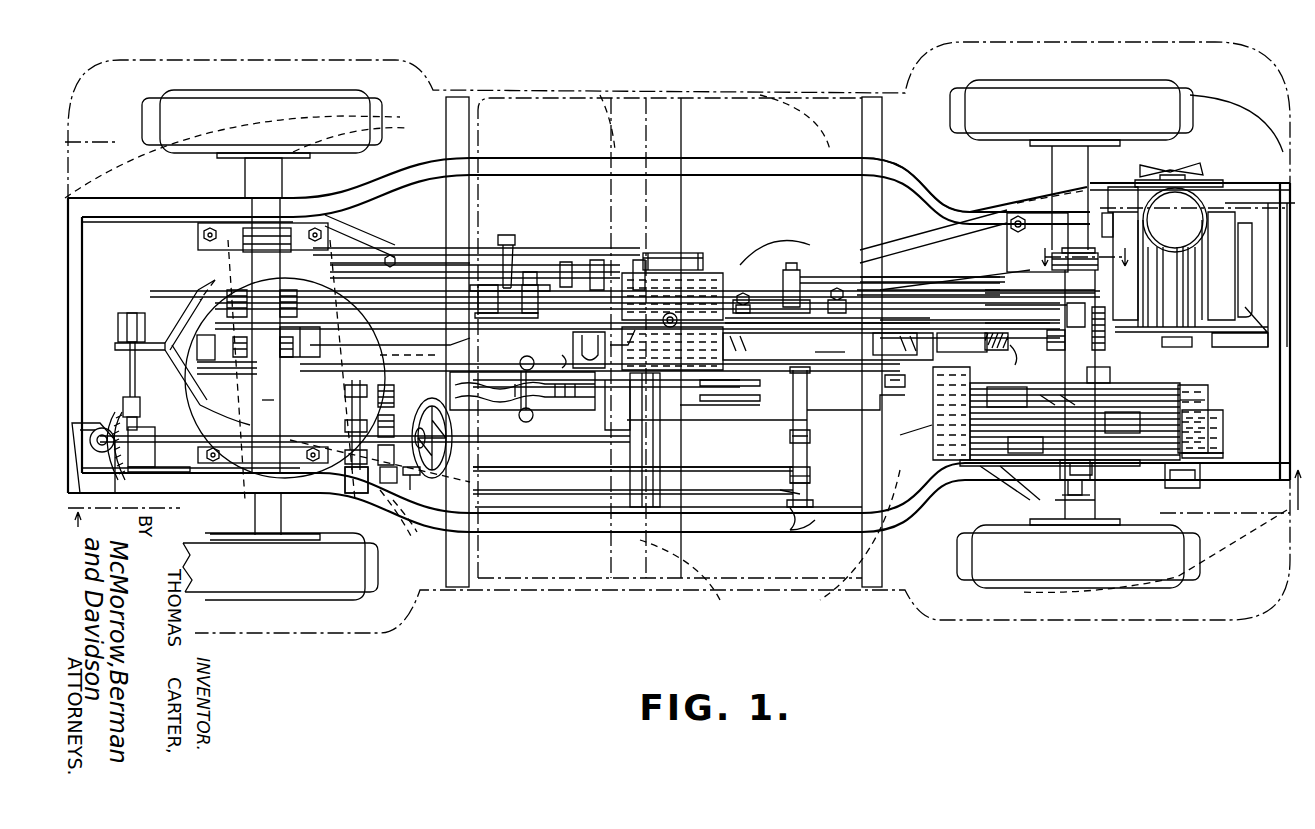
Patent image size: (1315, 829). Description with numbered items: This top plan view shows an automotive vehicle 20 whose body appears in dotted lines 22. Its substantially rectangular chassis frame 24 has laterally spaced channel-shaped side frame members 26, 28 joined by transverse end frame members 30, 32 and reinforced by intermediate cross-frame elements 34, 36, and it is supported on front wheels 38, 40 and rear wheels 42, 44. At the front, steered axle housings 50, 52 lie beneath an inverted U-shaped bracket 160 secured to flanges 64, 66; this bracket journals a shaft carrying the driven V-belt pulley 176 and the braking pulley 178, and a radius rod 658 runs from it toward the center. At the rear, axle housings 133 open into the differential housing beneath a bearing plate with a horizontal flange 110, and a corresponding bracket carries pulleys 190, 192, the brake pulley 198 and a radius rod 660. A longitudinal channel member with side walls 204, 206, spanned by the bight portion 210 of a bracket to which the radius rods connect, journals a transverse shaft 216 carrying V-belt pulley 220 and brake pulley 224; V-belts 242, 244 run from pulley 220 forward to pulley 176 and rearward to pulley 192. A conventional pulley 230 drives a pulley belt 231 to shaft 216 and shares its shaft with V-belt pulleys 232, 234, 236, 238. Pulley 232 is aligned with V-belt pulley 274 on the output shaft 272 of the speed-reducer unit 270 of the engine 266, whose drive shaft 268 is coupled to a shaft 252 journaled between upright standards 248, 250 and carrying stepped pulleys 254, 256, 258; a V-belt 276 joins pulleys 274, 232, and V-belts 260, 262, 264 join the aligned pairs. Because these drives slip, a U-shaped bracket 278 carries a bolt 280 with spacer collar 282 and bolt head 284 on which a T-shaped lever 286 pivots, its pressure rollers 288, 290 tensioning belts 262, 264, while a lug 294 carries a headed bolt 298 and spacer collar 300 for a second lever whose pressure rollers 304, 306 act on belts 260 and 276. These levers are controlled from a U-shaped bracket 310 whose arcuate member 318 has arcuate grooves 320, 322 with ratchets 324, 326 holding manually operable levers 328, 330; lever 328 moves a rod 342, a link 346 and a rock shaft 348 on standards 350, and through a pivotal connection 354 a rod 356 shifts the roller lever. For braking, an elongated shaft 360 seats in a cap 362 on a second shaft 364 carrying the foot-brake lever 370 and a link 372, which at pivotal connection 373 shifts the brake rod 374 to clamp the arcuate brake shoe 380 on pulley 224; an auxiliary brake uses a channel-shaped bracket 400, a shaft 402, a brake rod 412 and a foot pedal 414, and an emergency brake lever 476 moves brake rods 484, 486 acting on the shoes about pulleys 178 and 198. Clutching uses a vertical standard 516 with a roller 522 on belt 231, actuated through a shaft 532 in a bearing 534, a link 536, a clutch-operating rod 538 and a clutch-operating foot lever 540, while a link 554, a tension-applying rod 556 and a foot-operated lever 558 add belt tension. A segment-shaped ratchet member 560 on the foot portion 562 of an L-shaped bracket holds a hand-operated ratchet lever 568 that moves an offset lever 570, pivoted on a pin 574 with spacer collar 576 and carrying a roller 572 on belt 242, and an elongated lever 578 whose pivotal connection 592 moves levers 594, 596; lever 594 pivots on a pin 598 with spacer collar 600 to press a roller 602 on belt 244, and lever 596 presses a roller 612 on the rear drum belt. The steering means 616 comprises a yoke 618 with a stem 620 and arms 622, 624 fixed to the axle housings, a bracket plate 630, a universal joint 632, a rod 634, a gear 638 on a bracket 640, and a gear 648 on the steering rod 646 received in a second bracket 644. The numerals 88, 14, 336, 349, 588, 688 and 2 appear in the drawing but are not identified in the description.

The vehicle 20 is at (720, 75).
The inner frame 22 is at (585, 88).
The frame side rail 24 is at (832, 150).
The frame side rail 26 is at (548, 156).
The frame side rail 28 is at (565, 534).
The frame 30 is at (80, 258).
The radiator 32 is at (1278, 222).
The cross member 34 is at (447, 102).
The cross member 36 is at (868, 100).
The rear wheel 38 is at (270, 88).
The rear wheel 40 is at (290, 595).
The front wheel 42 is at (1083, 80).
The front wheel 44 is at (1090, 590).
The axle spindle 50 is at (253, 512).
The axle spindle 52 is at (285, 178).
The mounting plate 64 is at (263, 343).
The brace 66 is at (234, 238).
The bolt 88 is at (203, 235).
The brace 110 is at (1008, 236).
The axle shaft 133 is at (1062, 162).
The section line 14 is at (1082, 252).
The turntable 160 is at (285, 378).
The gear 176 is at (240, 300).
The bearing housing 178 is at (288, 246).
The housing 190 is at (1122, 290).
The gear 192 is at (1058, 325).
The bearing 198 is at (1058, 252).
The rod 204 is at (940, 280).
The rod 206 is at (500, 367).
The transmission 210 is at (718, 275).
The transmission housing 216 is at (690, 255).
The cover 220 is at (700, 265).
The cover 224 is at (690, 255).
The shaft 230 is at (948, 335).
The plate 231 is at (830, 343).
The clutch 232 is at (962, 342).
The lever 234 is at (1010, 338).
The spring 236 is at (932, 430).
The bar 238 is at (1005, 466).
The gear 242 is at (241, 338).
The shaft 244 is at (905, 315).
The bracket 248 is at (1195, 488).
The spring 250 is at (1180, 380).
The rod 252 is at (1208, 385).
The housing 254 is at (1215, 405).
The spring 256 is at (1220, 420).
The plate 258 is at (1222, 450).
The spring 260 is at (932, 408).
The link 262 is at (990, 470).
The link 264 is at (1030, 470).
The engine 266 is at (1243, 219).
The bracket 268 is at (1190, 337).
The fan 270 is at (1115, 222).
The shaft 272 is at (1123, 318).
The shaft 274 is at (1152, 330).
The lever 276 is at (1020, 353).
The bracket 278 is at (1092, 500).
The link 280 is at (1080, 505).
The bracket 282 is at (1065, 485).
The plate 284 is at (1050, 460).
The bracket 286 is at (1092, 470).
The clutch 288 is at (1122, 422).
The clutch 290 is at (1025, 444).
The shaft 294 is at (1050, 330).
The link 298 is at (1040, 408).
The link 300 is at (1070, 408).
The clutch 304 is at (1007, 397).
The clutch 306 is at (1097, 373).
The steering shaft 310 is at (615, 444).
The gear box 318 is at (610, 432).
The lever pivot 320 is at (520, 364).
The lever pivot 322 is at (520, 418).
The lever 324 is at (548, 358).
The lever 326 is at (580, 400).
The lever 328 is at (565, 423).
The lever 330 is at (536, 420).
The rod 336 is at (707, 410).
The rod 342 is at (733, 388).
The bearing 346 is at (810, 470).
The bearing 348 is at (810, 480).
The bearing 349 is at (810, 433).
The bearing 350 is at (890, 410).
The rod 354 is at (880, 460).
The rod 356 is at (930, 445).
The bracket 360 is at (355, 480).
The steering wheel 362 is at (350, 410).
The rod 364 is at (600, 358).
The gear 370 is at (385, 390).
The rod 372 is at (380, 255).
The nut 373 is at (396, 254).
The bracket 374 is at (494, 246).
The link 380 is at (632, 300).
The rod 400 is at (672, 492).
The rod 402 is at (672, 466).
The lever 412 is at (595, 425).
The gear 414 is at (388, 410).
The bolt 476 is at (513, 242).
The bracket 484 is at (480, 243).
The rod 486 is at (907, 256).
The plate 516 is at (810, 348).
The clutch 522 is at (895, 344).
The shaft 532 is at (792, 417).
The bracket 534 is at (790, 528).
The bearing 536 is at (794, 445).
The rod 538 is at (718, 388).
The bracket 540 is at (390, 485).
The rod 554 is at (790, 492).
The rod 556 is at (525, 477).
The link 558 is at (410, 525).
The bracket 560 is at (572, 265).
The bracket 562 is at (638, 262).
The bracket 568 is at (600, 262).
The shaft 570 is at (500, 332).
The rod 572 is at (456, 262).
The bracket 574 is at (536, 270).
The plate 576 is at (550, 285).
The shaft 578 is at (430, 345).
The link 588 is at (200, 400).
The bracket 592 is at (848, 285).
The link 594 is at (817, 297).
The rod 596 is at (985, 280).
The bracket 598 is at (815, 290).
The plate 600 is at (758, 298).
The link 602 is at (752, 268).
The bracket 612 is at (222, 352).
The brake pedal 616 is at (118, 395).
The link 618 is at (190, 284).
The bar 620 is at (170, 352).
The arm 622 is at (175, 375).
The arm 624 is at (170, 325).
The rod 630 is at (128, 323).
The cylinder 632 is at (132, 312).
The bar 634 is at (130, 358).
The sector 638 is at (110, 415).
The bracket 640 is at (160, 467).
The bracket 644 is at (150, 450).
The link 646 is at (262, 445).
The cylinder 648 is at (140, 424).
The bearing 658 is at (300, 338).
The rod 660 is at (885, 320).
The pivot 688 is at (668, 328).
The section line 2 is at (688, 498).